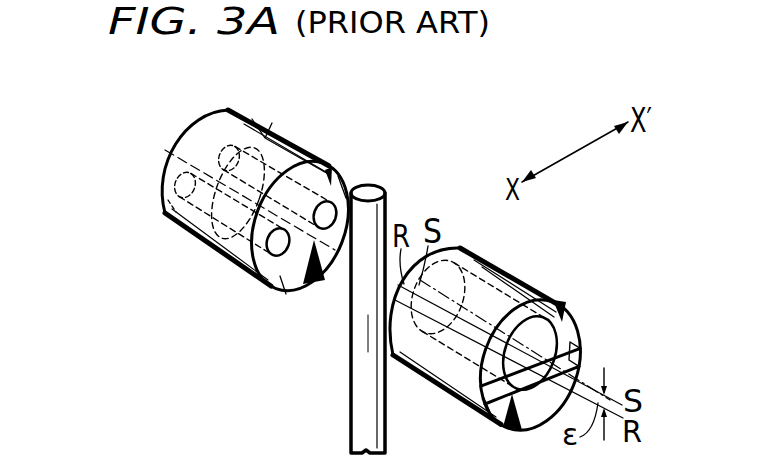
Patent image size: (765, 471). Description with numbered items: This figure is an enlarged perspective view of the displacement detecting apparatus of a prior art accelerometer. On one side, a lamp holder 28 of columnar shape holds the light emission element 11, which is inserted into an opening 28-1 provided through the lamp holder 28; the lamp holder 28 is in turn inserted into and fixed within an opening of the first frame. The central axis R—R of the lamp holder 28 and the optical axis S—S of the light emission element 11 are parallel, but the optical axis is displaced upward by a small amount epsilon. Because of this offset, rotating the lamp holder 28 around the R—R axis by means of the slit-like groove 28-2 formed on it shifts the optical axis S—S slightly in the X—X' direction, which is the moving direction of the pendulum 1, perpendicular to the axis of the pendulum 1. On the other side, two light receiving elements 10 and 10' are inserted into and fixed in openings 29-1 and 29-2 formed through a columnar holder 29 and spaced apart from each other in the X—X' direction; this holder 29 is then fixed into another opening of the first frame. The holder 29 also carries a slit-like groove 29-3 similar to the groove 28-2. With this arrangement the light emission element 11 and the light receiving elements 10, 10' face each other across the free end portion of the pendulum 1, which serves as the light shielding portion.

The pendulum 1 is at (371, 186).
The columnar holder 29 is at (229, 110).
The opening 29-1 is at (346, 188).
The opening 29-2 is at (284, 287).
The slit-like groove 29-3 is at (165, 200).
The light receiving element 10 is at (277, 158).
The light receiving element 10' is at (230, 239).
The lamp holder 28 is at (536, 300).
The opening 28-1 is at (581, 332).
The slit-like groove 28-2 is at (488, 410).
The light emission element 11 is at (502, 280).